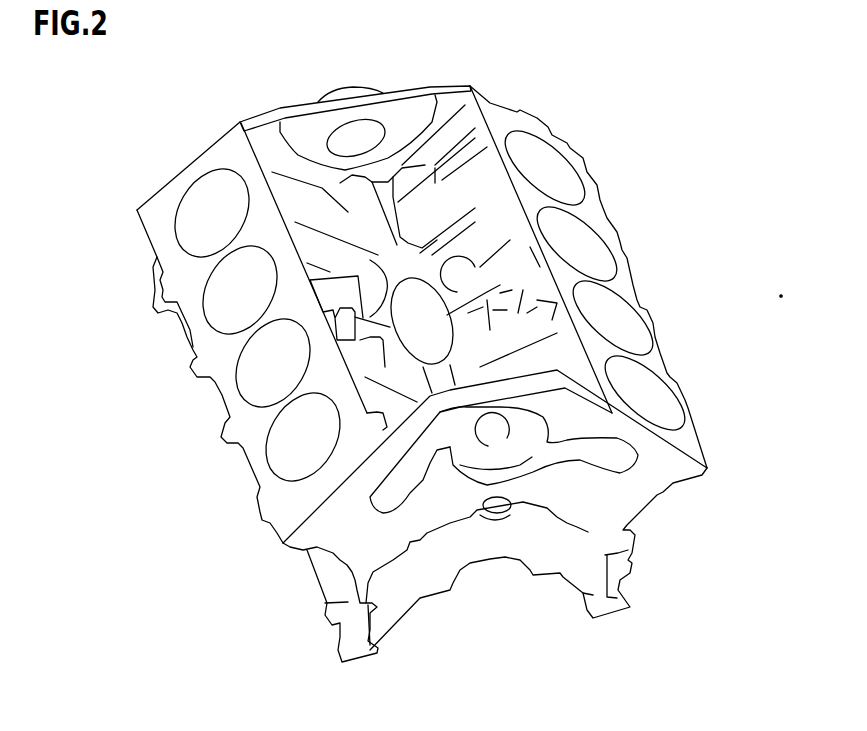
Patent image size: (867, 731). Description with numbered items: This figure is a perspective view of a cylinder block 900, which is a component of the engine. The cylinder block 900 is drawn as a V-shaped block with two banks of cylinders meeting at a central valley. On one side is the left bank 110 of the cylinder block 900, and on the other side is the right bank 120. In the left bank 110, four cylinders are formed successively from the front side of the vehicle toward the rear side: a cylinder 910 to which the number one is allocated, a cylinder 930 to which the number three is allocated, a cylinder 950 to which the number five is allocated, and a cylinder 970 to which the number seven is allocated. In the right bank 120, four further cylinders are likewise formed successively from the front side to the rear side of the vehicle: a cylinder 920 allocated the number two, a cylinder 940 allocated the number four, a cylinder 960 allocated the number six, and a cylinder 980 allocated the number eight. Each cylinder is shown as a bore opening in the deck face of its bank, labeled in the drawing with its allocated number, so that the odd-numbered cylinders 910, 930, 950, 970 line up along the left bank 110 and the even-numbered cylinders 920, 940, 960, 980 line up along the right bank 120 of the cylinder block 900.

The cylinder block 900 is at (638, 488).
The left bank 110 is at (598, 125).
The right bank 120 is at (232, 100).
The cylinder 910 is at (663, 408).
The cylinder 920 is at (280, 463).
The cylinder 930 is at (633, 330).
The cylinder 940 is at (247, 387).
The cylinder 950 is at (602, 257).
The cylinder 960 is at (217, 308).
The cylinder 970 is at (570, 182).
The cylinder 980 is at (185, 235).